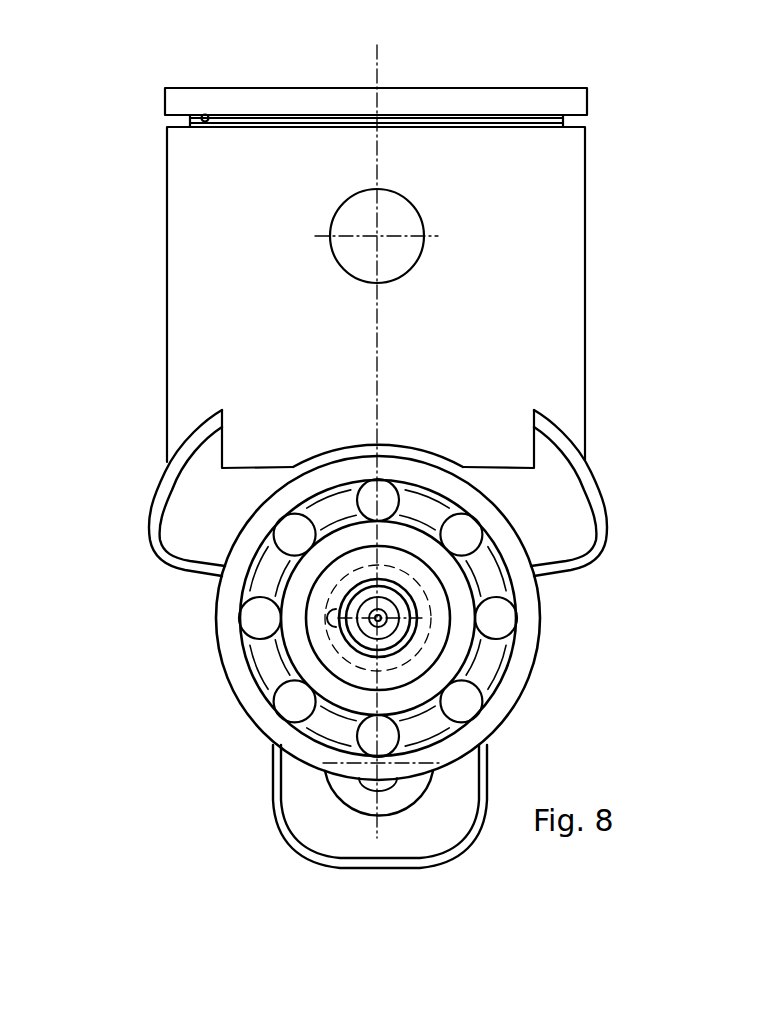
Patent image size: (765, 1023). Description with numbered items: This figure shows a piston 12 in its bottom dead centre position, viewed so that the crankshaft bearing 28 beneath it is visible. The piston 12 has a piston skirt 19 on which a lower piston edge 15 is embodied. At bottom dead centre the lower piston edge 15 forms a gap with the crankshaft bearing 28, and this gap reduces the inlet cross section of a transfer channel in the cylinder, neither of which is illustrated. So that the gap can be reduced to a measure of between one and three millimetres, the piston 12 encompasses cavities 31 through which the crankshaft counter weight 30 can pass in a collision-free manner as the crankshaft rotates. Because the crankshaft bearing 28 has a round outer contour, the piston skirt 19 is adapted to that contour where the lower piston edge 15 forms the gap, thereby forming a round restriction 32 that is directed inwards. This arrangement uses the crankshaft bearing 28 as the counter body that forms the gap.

The piston 12 is at (165, 252).
The lower piston edge 15 is at (417, 445).
The piston skirt 19 is at (233, 453).
The crankshaft bearing 28 is at (528, 618).
The crankshaft counter weight 30 is at (565, 500).
The cavities 31 is at (197, 432).
The round restriction 32 is at (348, 432).